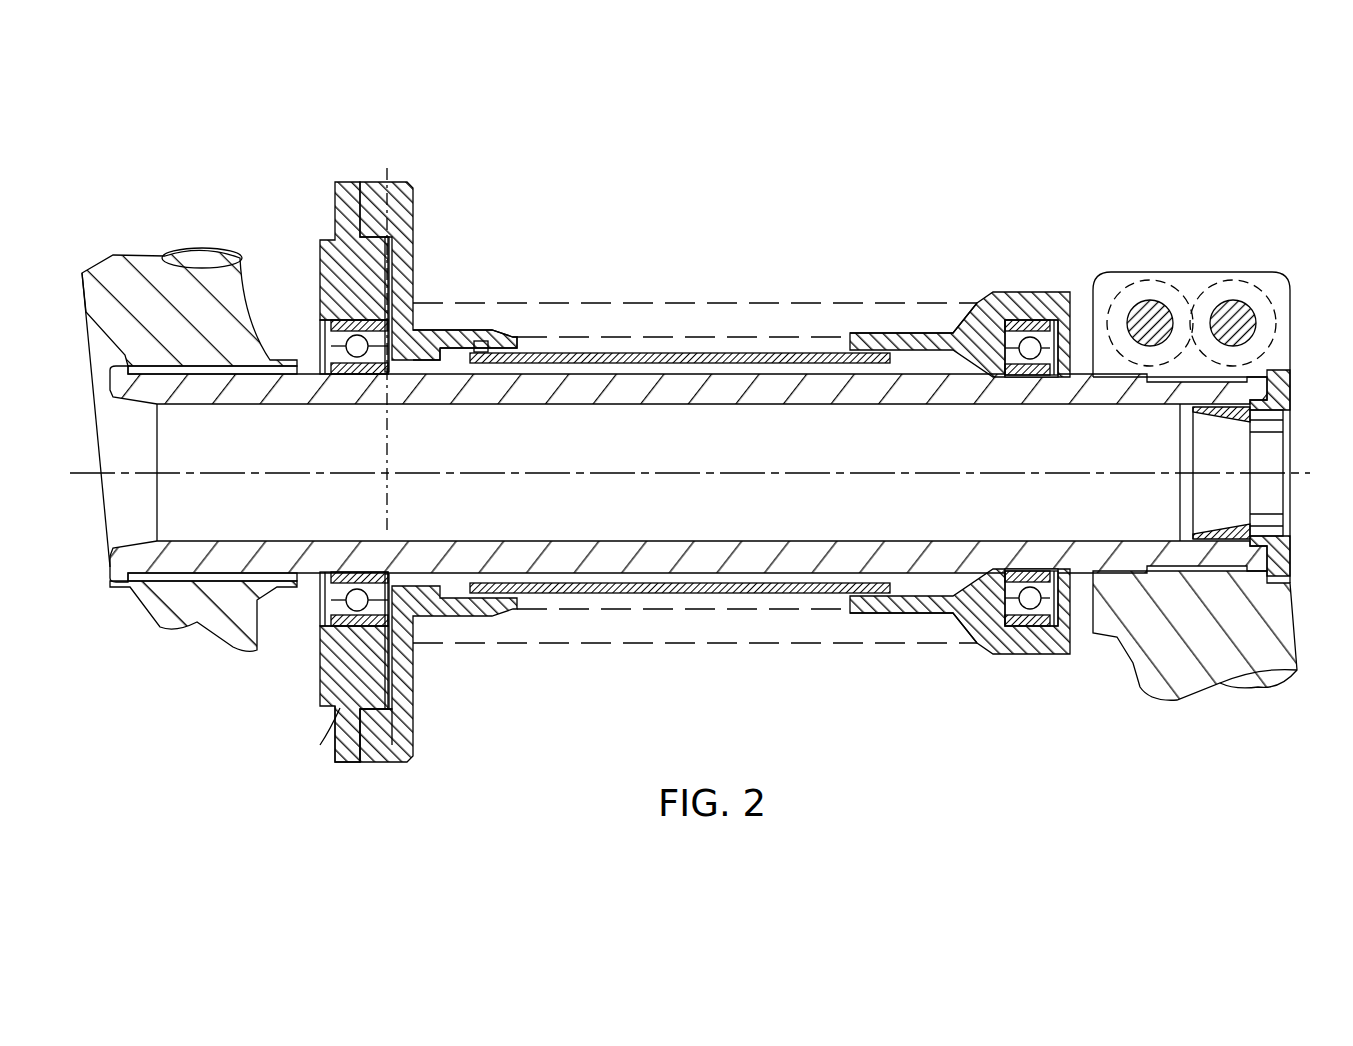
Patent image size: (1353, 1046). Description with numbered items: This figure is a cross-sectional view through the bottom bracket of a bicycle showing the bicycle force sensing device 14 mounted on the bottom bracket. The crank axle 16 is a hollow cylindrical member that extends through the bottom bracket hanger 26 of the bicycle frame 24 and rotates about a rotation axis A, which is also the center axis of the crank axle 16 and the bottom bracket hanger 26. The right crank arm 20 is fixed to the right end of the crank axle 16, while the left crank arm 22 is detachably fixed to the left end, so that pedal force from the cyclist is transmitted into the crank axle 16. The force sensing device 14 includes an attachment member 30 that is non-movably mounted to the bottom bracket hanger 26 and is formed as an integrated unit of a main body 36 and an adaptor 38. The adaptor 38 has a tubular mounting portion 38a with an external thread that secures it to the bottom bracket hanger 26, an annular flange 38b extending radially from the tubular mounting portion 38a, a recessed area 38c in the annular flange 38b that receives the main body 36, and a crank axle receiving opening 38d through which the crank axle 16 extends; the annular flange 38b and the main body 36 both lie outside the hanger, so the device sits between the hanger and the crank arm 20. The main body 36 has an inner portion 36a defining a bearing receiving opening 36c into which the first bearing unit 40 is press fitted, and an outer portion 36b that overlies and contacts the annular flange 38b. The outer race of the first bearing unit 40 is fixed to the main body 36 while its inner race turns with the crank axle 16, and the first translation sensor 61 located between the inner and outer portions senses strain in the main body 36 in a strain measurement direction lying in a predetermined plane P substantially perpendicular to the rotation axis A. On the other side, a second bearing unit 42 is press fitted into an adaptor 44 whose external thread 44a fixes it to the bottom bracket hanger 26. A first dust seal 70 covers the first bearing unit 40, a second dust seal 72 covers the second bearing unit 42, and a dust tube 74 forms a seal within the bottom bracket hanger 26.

The bicycle force sensing device 14 is at (296, 238).
The crank axle 16 is at (700, 548).
The right crank arm 20 is at (185, 305).
The left crank arm 22 is at (1192, 280).
The bicycle frame 24 is at (816, 220).
The bottom bracket hanger 26 is at (731, 303).
The attachment member 30 is at (466, 147).
The main body 36 is at (356, 178).
The inner portion 36a is at (389, 272).
The outer portion 36b is at (348, 762).
The bearing receiving opening 36c is at (335, 613).
The adaptor 38 is at (422, 242).
The tubular mounting portion 38a is at (468, 327).
The annular flange 38b is at (398, 764).
The recessed area 38c is at (372, 714).
The crank axle receiving opening 38d is at (418, 364).
The first bearing unit 40 is at (348, 378).
The second bearing unit 42 is at (1015, 325).
The adaptor 44 is at (990, 300).
The external thread 44a is at (925, 333).
The first translation sensor 61 is at (389, 675).
The first dust seal 70 is at (328, 572).
The second dust seal 72 is at (1065, 643).
The dust tube 74 is at (603, 350).
The rotation axis A is at (1300, 473).
The predetermined plane P is at (392, 512).